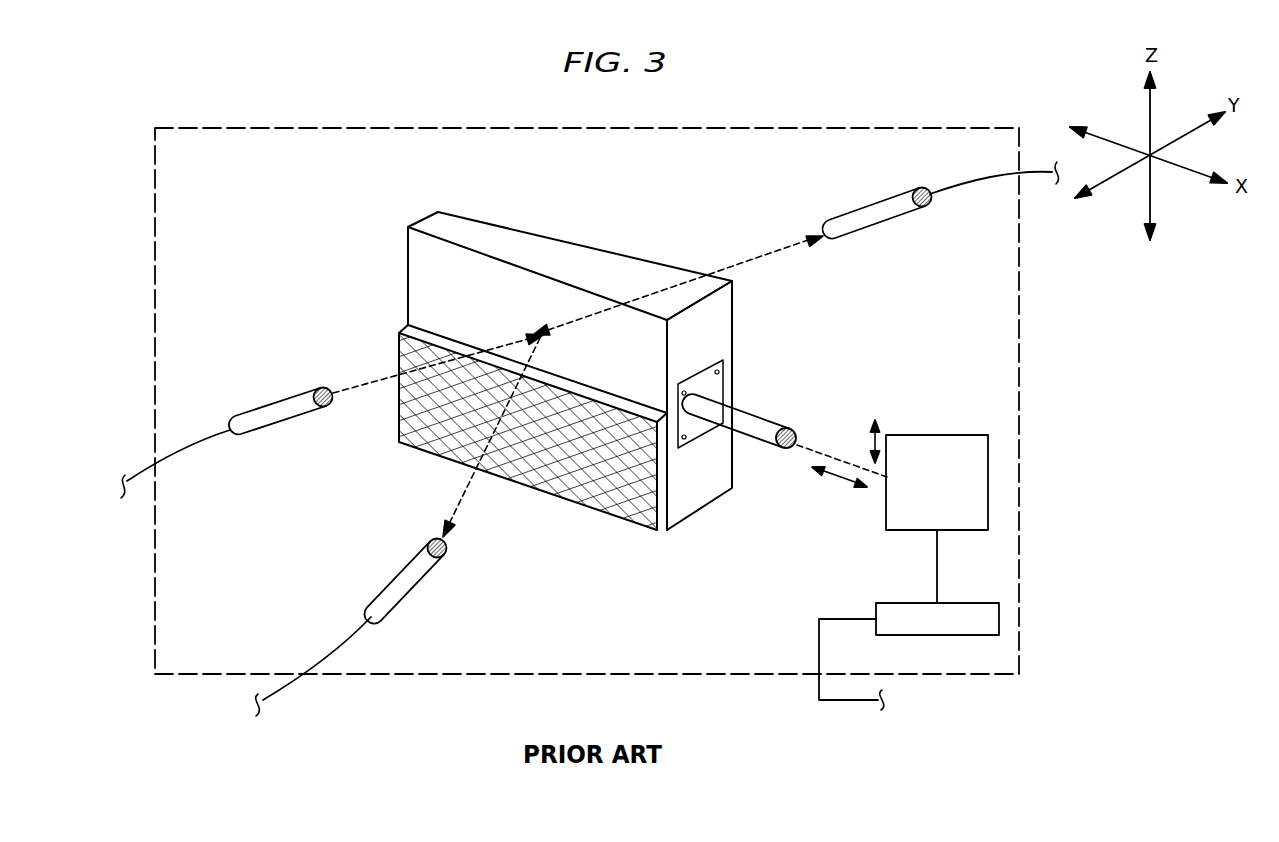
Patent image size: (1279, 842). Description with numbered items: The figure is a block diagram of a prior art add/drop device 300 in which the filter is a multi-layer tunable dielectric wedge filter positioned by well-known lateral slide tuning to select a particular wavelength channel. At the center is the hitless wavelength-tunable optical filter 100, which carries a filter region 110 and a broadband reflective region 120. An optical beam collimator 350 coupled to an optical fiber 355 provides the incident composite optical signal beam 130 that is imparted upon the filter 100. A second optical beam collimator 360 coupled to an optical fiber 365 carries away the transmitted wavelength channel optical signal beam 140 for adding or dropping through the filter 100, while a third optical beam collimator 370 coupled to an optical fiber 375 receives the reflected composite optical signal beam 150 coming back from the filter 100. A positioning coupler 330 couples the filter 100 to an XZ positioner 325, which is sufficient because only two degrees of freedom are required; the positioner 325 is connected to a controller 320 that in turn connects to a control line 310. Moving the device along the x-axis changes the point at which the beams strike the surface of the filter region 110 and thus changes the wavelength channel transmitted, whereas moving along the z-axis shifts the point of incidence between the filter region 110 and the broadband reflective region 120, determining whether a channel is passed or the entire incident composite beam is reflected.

The add/drop device 300 is at (740, 128).
The hitless wavelength-tunable optical filter 100 is at (733, 333).
The filter region 110 is at (413, 255).
The broadband reflective region 120 is at (597, 507).
The incident composite optical signal beam 130 is at (372, 380).
The transmitted wavelength channel optical signal beam 140 is at (750, 260).
The reflected composite optical signal beam 150 is at (478, 490).
The positioning coupler 330 is at (758, 410).
The XZ positioner 325 is at (988, 470).
The controller 320 is at (912, 603).
The control line 310 is at (887, 700).
The optical beam collimator 350 is at (278, 400).
The optical fiber 355 is at (178, 452).
The optical beam collimator 360 is at (877, 225).
The optical fiber 365 is at (987, 182).
The optical beam collimator 370 is at (410, 597).
The optical fiber 375 is at (330, 655).